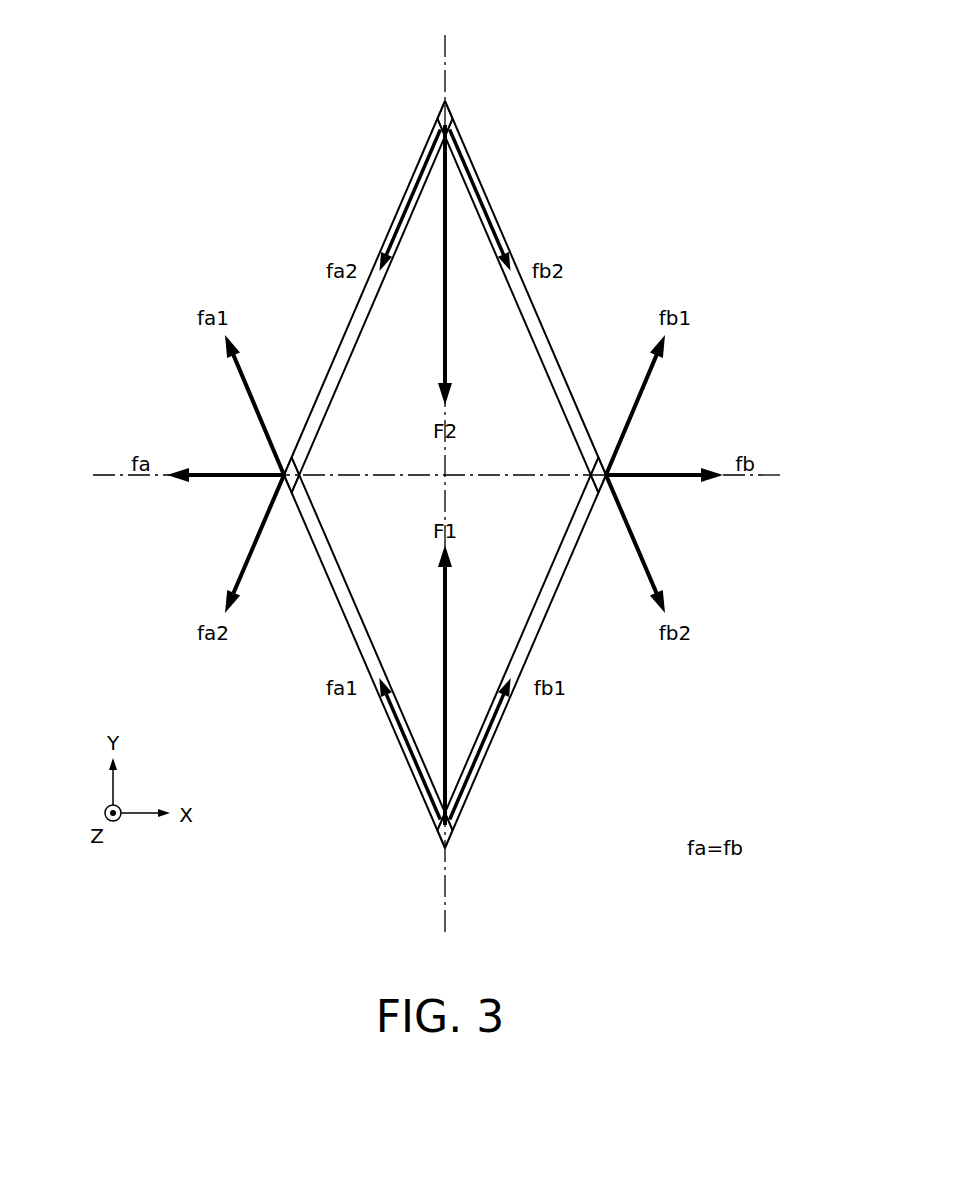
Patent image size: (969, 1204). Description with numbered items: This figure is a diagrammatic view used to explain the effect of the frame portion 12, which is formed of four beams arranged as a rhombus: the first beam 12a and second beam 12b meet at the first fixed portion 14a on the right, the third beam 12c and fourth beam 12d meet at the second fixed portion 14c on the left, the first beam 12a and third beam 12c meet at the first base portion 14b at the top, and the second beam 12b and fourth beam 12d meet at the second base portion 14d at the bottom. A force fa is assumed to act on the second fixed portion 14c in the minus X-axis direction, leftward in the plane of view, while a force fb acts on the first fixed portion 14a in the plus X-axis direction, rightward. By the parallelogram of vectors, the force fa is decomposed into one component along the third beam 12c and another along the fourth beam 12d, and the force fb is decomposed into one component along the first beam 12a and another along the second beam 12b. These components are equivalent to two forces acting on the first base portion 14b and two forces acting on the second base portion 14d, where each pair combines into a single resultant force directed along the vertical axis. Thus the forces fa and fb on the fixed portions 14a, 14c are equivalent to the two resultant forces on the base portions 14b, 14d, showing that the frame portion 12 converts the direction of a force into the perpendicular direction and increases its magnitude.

The frame portion 12 is at (533, 197).
The first beam 12a is at (548, 320).
The second beam 12b is at (548, 602).
The third beam 12c is at (340, 341).
The fourth beam 12d is at (341, 617).
The first fixed portion 14a is at (600, 474).
The first base portion 14b is at (449, 104).
The second fixed portion 14c is at (298, 474).
The second base portion 14d is at (448, 838).